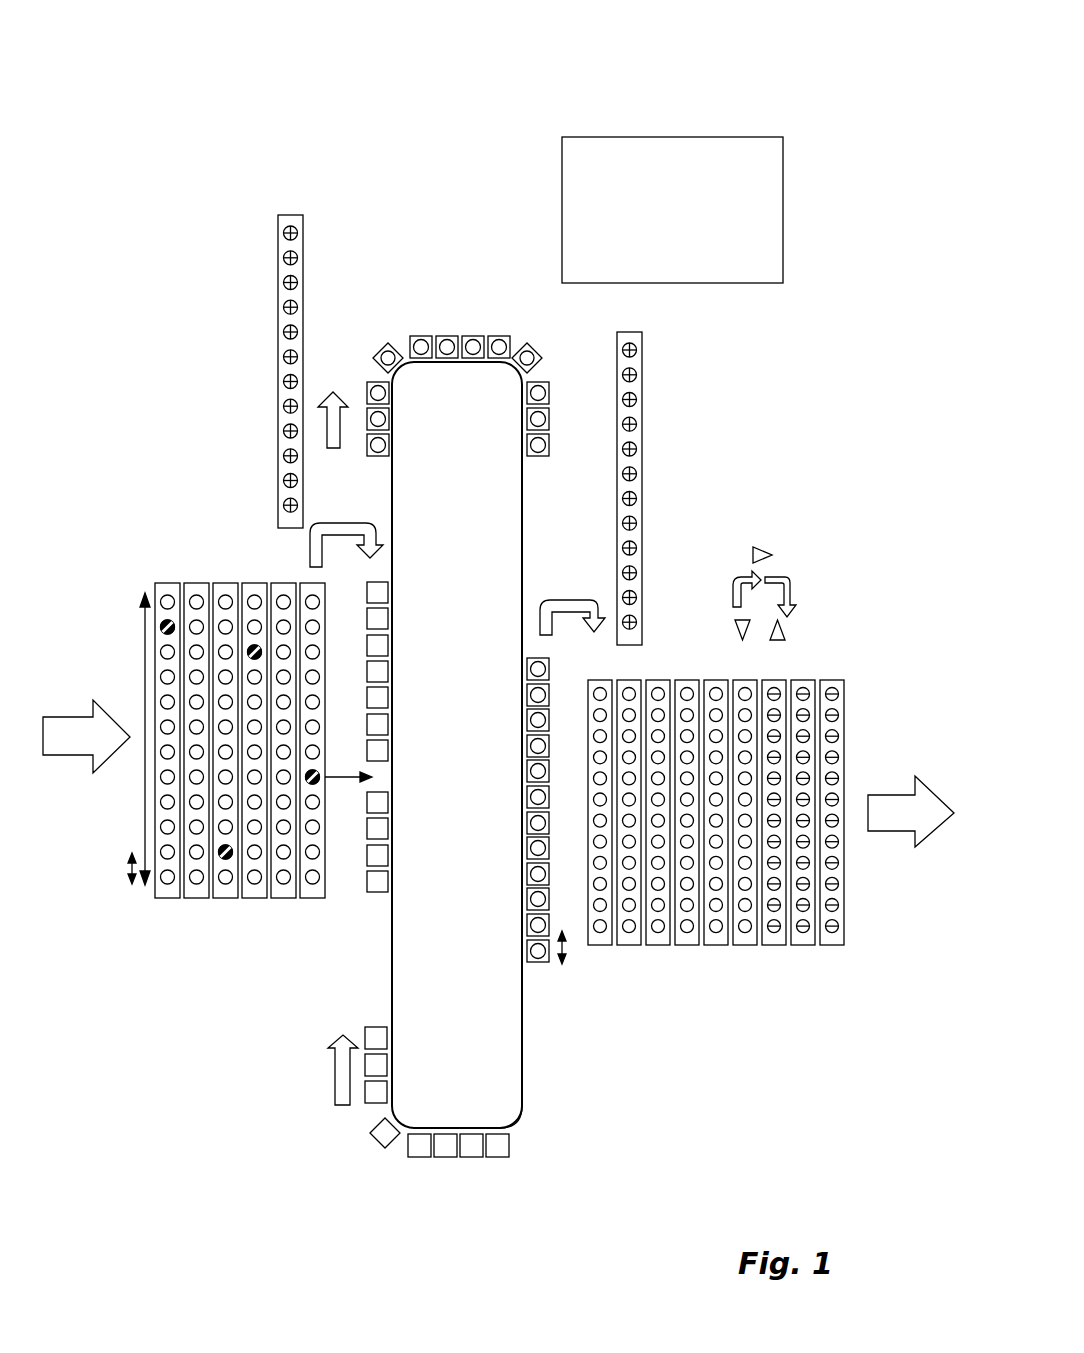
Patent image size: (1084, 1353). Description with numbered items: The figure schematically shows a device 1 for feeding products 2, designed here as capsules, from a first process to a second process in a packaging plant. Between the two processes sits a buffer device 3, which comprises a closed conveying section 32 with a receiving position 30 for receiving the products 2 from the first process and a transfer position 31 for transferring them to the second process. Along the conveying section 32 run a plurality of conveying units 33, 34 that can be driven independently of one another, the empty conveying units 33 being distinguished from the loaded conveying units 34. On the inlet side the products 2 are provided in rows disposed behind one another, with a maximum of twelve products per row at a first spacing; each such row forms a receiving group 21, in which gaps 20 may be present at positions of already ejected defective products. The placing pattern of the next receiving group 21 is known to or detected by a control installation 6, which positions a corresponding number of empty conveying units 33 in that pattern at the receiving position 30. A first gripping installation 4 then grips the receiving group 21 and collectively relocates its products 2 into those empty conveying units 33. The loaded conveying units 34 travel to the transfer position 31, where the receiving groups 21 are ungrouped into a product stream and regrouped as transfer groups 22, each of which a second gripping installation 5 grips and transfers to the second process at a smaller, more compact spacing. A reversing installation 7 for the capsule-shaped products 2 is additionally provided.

The device 1 is at (248, 127).
The products 2 is at (196, 880).
The buffer device 3 is at (437, 272).
The first gripping installation 4 is at (260, 332).
The second gripping installation 5 is at (673, 343).
The control installation 6 is at (672, 210).
The reversing installation 7 is at (762, 525).
The gaps 20 is at (167, 622).
The receiving groups 21 is at (308, 912).
The transfer groups 22 is at (605, 960).
The receiving position 30 is at (372, 912).
The transfer position 31 is at (543, 987).
The closed conveying section 32 is at (523, 1108).
The empty conveying units 33 is at (447, 1155).
The loaded conveying units 34 is at (415, 338).